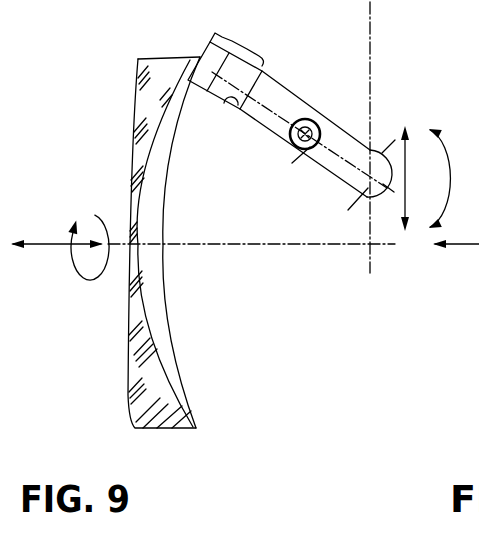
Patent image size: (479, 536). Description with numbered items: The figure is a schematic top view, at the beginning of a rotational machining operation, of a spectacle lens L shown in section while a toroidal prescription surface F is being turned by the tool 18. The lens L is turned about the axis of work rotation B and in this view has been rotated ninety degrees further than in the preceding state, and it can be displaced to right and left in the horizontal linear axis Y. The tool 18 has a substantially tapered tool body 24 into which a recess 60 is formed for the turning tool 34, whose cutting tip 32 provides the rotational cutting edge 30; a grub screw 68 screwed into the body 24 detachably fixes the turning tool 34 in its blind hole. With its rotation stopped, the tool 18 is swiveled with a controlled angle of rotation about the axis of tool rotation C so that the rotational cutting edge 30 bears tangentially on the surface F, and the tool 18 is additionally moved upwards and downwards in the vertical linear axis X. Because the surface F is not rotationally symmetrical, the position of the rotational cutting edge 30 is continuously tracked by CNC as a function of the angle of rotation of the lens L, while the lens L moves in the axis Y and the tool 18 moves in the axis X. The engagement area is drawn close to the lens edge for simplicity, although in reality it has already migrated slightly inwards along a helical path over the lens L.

The tool 18 is at (301, 86).
The tool body 24 is at (332, 162).
The rotational cutting edge 30 is at (186, 43).
The cutting tip 32 is at (214, 50).
The turning tool 34 is at (243, 69).
The recess 60 is at (229, 102).
The grub screw 68 is at (316, 123).
The spectacle lens L is at (190, 371).
The prescription surface F is at (150, 323).
The axis of work rotation B is at (99, 274).
The axis of tool rotation C is at (452, 178).
The linear axis X is at (407, 198).
The linear axis Y is at (53, 247).